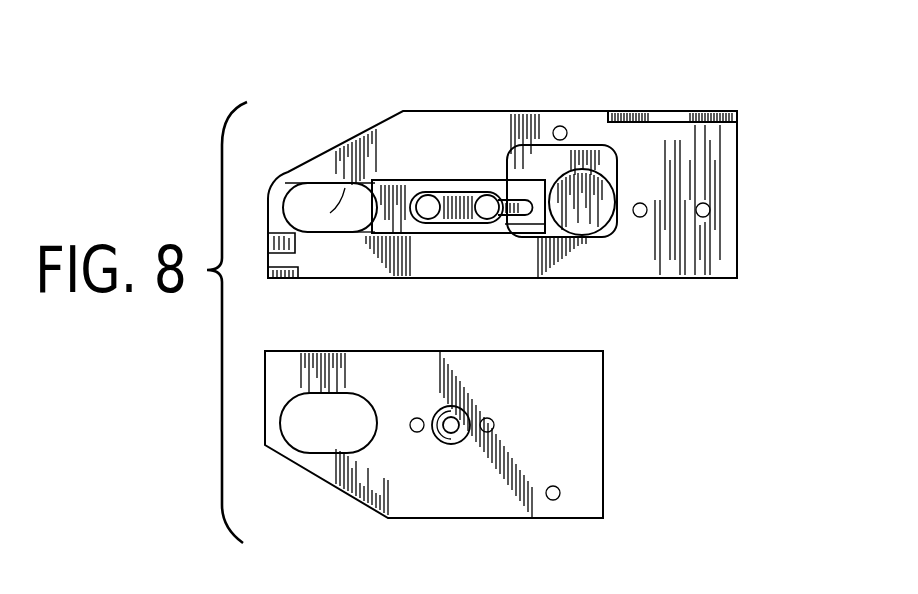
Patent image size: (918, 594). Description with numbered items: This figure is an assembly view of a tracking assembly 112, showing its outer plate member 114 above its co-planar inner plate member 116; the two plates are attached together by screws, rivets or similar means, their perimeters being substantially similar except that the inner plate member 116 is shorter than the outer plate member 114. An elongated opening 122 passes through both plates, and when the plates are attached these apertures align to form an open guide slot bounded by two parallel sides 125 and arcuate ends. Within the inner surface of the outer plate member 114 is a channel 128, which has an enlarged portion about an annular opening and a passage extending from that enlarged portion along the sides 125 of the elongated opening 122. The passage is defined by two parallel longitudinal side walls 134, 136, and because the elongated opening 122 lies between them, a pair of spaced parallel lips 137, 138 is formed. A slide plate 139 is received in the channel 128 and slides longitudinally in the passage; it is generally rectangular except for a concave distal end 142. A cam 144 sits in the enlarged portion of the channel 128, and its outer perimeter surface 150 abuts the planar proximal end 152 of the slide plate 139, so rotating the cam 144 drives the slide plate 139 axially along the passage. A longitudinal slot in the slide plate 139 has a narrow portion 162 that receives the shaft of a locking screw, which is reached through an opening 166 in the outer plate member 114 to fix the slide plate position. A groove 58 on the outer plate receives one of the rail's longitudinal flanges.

The groove 58 is at (728, 118).
The tracking assembly 112 is at (619, 78).
The outer plate member 114 is at (373, 137).
The inner plate member 116 is at (577, 503).
The elongated opening 122 is at (310, 185).
The parallel sides 125 is at (343, 183).
The channel 128 is at (455, 180).
The longitudinal side wall 134 is at (410, 185).
The longitudinal side wall 136 is at (430, 236).
The lip 137 is at (322, 182).
The lip 138 is at (317, 236).
The slide plate 139 is at (530, 236).
The distal end 142 is at (378, 208).
The cam 144 is at (607, 208).
The outer perimeter surface 150 is at (607, 168).
The proximal end 152 is at (557, 236).
The narrow portion 162 is at (518, 226).
The opening 166 is at (484, 195).